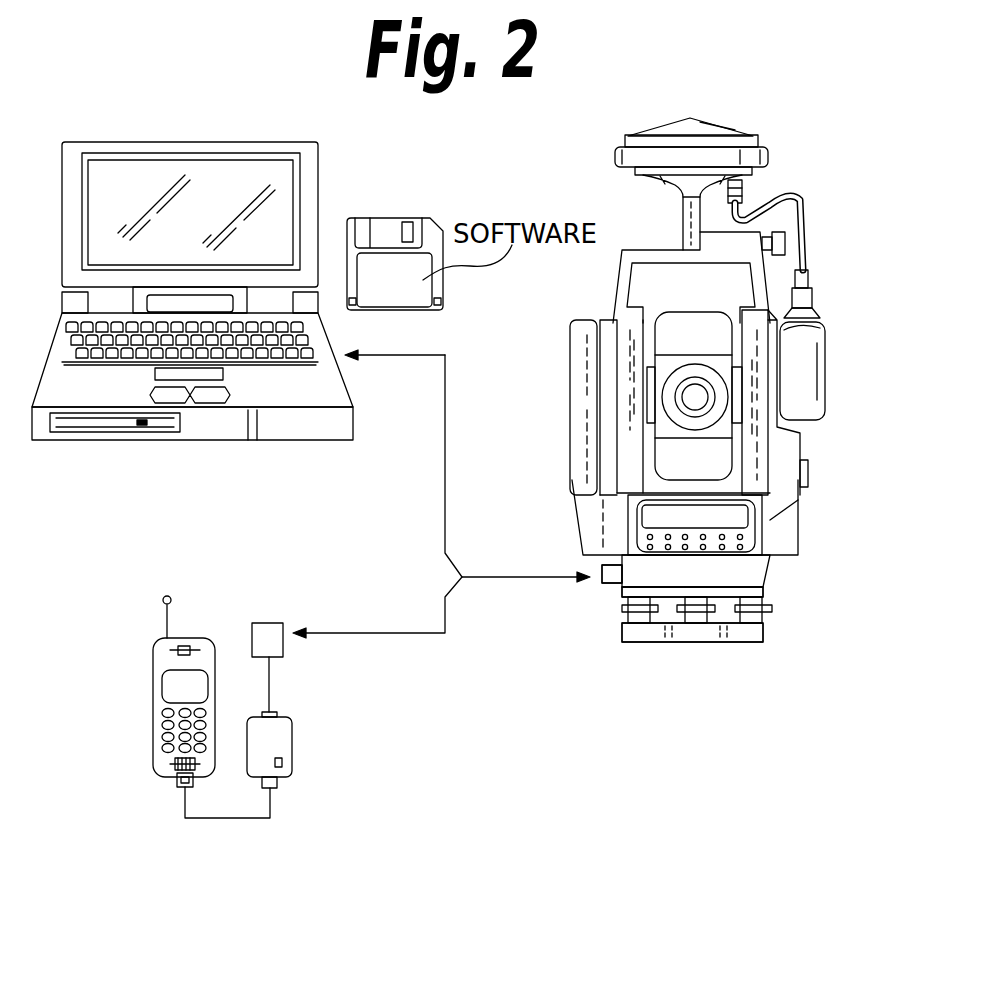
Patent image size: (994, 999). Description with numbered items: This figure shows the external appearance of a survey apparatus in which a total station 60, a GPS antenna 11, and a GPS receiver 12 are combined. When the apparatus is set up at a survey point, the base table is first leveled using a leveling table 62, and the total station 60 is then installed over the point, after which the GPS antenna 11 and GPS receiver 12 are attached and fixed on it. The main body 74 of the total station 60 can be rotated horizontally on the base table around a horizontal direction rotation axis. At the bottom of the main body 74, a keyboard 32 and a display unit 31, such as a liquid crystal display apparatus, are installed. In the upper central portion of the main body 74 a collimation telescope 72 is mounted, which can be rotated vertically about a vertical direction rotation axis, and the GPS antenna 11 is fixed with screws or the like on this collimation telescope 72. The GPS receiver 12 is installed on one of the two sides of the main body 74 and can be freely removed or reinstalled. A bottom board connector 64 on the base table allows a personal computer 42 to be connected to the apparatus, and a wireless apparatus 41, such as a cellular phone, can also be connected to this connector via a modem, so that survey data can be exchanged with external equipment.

The GPS antenna 11 is at (772, 112).
The GPS receiver 12 is at (808, 380).
The display unit 31 is at (722, 517).
The keyboard 32 is at (740, 547).
The wireless apparatus 41 is at (195, 622).
The personal computer 42 is at (332, 172).
The total station 60 is at (720, 448).
The leveling table 62 is at (797, 613).
The bottom board connector 64 is at (605, 583).
The collimation telescope 72 is at (670, 362).
The main body 74 is at (775, 340).